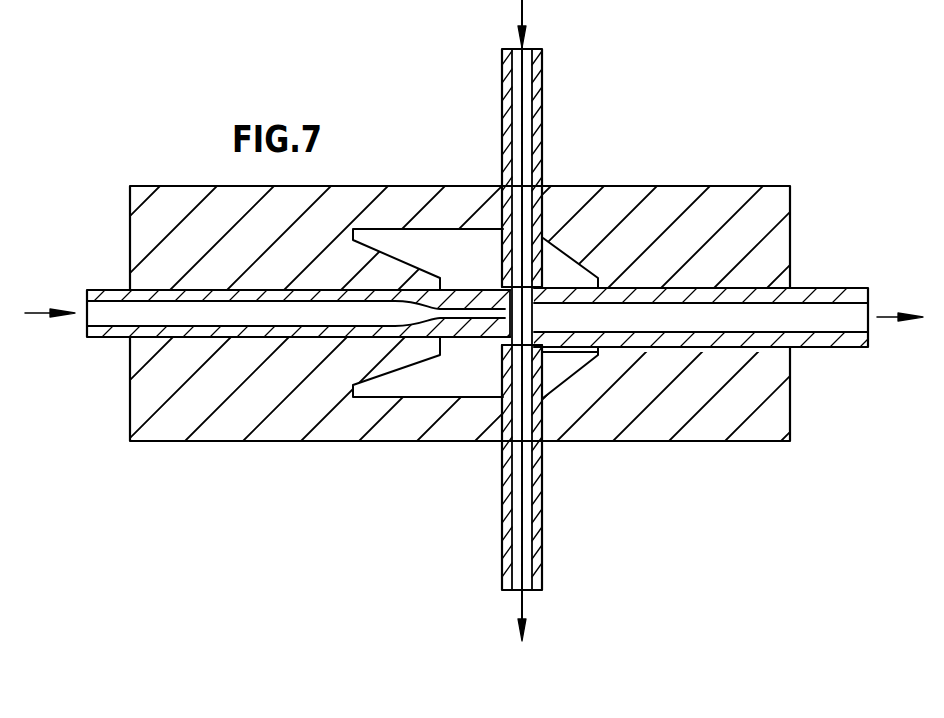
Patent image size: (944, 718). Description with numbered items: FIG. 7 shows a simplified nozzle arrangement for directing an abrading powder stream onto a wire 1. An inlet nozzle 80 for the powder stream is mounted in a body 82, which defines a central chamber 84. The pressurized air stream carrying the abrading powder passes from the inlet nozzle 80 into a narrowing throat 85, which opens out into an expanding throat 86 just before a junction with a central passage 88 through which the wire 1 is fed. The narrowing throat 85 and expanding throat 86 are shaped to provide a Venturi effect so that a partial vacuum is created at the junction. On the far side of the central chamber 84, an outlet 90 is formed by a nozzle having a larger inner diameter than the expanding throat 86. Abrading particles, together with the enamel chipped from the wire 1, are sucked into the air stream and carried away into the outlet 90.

The wire 1 is at (521, 11).
The inlet nozzle 80 is at (110, 323).
The body 82 is at (677, 198).
The central chamber 84 is at (418, 381).
The narrowing throat 85 is at (408, 317).
The expanding throat 86 is at (500, 297).
The central passage 88 is at (511, 591).
The outlet 90 is at (840, 318).